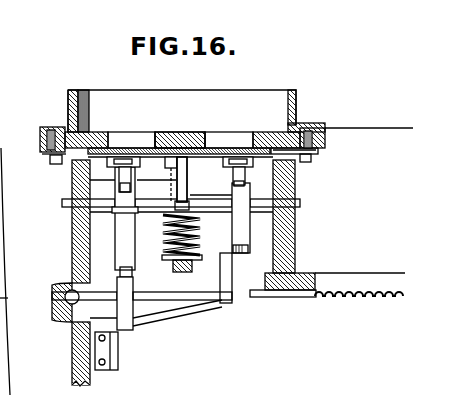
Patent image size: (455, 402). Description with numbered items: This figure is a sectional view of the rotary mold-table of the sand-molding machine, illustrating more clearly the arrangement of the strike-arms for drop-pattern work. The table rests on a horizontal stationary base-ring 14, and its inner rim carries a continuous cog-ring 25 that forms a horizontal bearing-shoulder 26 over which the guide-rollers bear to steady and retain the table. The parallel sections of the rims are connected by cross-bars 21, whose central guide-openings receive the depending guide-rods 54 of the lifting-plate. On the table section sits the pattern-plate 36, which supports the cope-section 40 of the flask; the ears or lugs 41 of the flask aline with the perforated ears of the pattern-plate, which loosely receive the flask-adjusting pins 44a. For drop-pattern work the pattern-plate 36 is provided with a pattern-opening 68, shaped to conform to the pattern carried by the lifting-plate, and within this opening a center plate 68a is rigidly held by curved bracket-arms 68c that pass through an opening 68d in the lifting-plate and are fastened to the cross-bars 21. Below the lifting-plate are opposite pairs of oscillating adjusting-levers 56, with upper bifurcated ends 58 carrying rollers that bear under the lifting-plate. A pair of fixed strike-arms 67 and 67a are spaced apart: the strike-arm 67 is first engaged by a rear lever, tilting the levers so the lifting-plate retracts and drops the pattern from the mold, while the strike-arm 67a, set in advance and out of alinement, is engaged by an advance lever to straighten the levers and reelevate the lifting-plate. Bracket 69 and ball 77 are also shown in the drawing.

The stationary base-ring 14 is at (73, 348).
The cross-bars 21 is at (149, 212).
The cog-ring 25 is at (355, 300).
The horizontal bearing-shoulder 26 is at (358, 272).
The pattern-plate 36 is at (93, 111).
The cope-section 40 is at (280, 91).
The meeting ears or lugs 41 is at (318, 128).
The flask-adjusting pins 44a is at (341, 143).
The depending guide-rods 54 is at (186, 264).
The oscillating adjusting-levers 56 is at (185, 218).
The upper bifurcated ends 58 is at (118, 174).
The strike-arm 67 is at (130, 305).
The strike-arm 67a is at (209, 304).
The pattern-opening 68 is at (122, 138).
The center plate 68a is at (182, 133).
The curved bracket-arms 68c is at (190, 190).
The opening 68d is at (161, 180).
The bracket 69 is at (258, 166).
The ball 77 is at (60, 300).